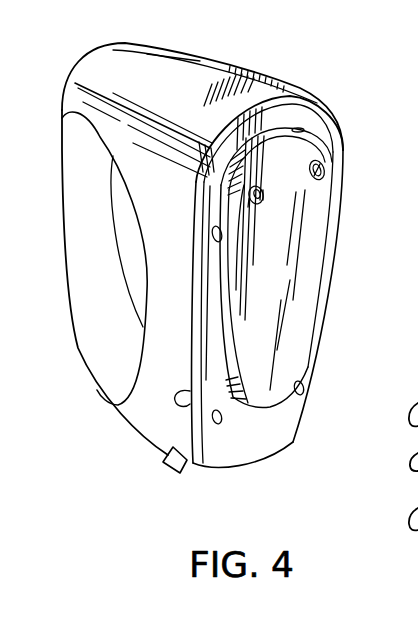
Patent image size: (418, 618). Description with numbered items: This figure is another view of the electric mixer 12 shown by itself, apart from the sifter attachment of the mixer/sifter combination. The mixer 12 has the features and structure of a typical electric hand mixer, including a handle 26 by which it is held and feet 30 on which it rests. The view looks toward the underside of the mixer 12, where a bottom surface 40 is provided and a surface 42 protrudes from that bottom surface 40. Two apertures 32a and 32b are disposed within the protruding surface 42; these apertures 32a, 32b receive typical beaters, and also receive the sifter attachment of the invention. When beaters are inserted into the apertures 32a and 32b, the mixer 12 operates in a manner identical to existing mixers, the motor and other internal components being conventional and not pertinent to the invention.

The electric mixer 12 is at (308, 69).
The handle 26 is at (100, 303).
The feet 30 is at (175, 467).
The aperture 32a is at (323, 163).
The aperture 32b is at (268, 193).
The bottom surface 40 is at (252, 446).
The surface 42 is at (296, 362).